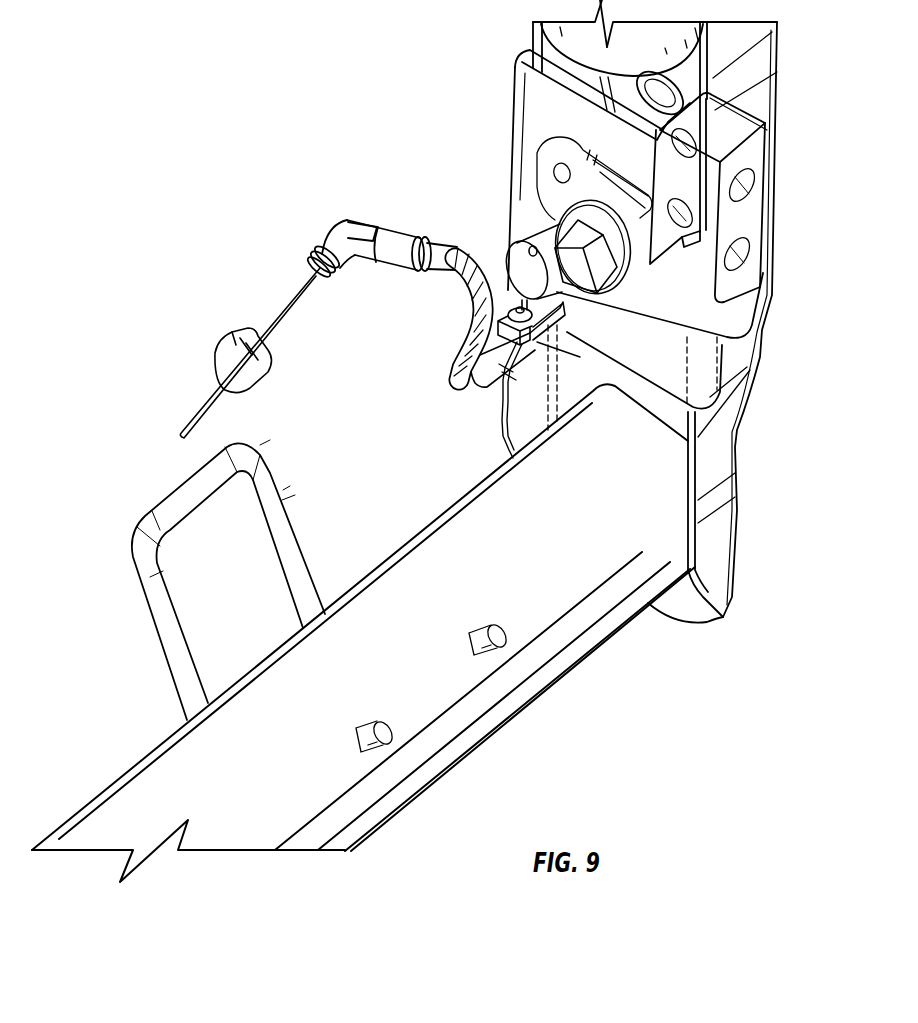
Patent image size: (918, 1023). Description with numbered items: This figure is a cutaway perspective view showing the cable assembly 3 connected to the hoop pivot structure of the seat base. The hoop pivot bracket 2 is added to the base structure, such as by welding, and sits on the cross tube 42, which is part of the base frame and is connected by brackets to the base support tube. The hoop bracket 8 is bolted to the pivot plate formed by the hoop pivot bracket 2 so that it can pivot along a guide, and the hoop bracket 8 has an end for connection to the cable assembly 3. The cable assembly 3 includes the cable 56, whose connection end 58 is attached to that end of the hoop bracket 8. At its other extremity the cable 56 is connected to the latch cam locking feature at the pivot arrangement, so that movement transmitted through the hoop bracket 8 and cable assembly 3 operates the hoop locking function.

The hoop pivot bracket 2 is at (518, 85).
The cable assembly 3 is at (440, 230).
The hoop bracket 8 is at (750, 215).
The cross tube 42 is at (552, 668).
The cable 56 is at (292, 310).
The connection end 58 is at (507, 260).